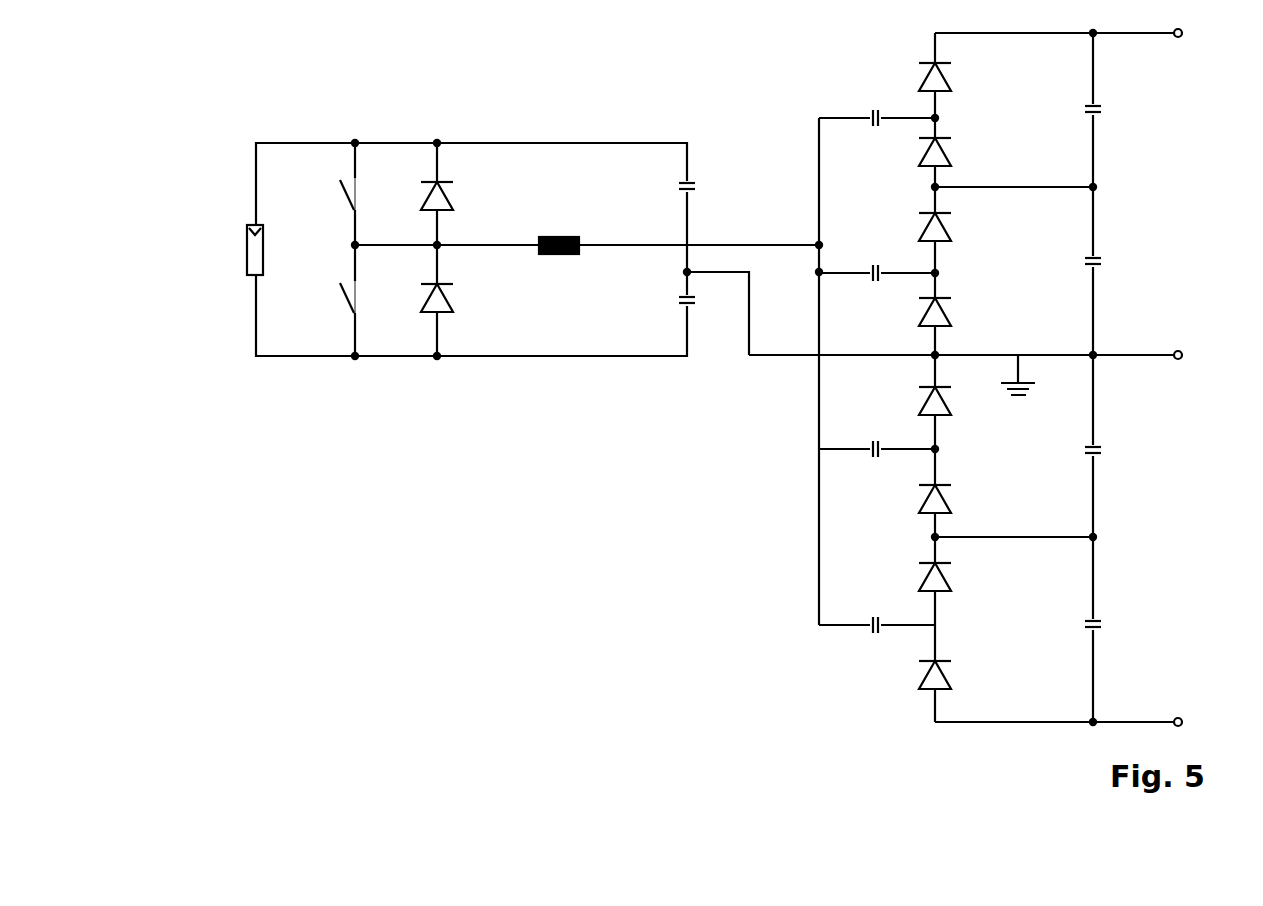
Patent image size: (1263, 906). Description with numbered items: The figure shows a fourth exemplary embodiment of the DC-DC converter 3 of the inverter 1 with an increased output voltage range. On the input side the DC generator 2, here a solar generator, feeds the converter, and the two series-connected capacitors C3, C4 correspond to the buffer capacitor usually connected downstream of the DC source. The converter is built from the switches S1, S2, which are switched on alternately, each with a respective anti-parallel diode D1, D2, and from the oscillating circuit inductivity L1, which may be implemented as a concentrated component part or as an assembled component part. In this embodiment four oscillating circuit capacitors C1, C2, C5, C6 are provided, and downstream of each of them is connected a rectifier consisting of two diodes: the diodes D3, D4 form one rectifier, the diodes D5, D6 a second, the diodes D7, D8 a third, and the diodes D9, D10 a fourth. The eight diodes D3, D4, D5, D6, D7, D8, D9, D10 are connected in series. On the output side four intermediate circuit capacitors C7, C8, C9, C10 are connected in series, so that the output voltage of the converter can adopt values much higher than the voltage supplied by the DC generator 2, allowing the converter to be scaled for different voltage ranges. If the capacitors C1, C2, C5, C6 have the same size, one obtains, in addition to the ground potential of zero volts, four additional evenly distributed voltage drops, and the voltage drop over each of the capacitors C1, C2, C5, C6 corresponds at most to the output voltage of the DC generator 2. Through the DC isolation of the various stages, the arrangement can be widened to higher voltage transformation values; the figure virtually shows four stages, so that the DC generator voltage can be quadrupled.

The inverter 1 is at (679, 428).
The DC generator 2 is at (251, 251).
The DC-DC converter 3 is at (792, 104).
The switch S1 is at (333, 195).
The switch S2 is at (333, 298).
The anti-parallel diode D1 is at (454, 196).
The anti-parallel diode D2 is at (454, 300).
The diode D3 is at (952, 227).
The diode D4 is at (952, 312).
The diode D5 is at (952, 401).
The diode D6 is at (952, 499).
The diode D7 is at (952, 77).
The diode D8 is at (952, 152).
The diode D9 is at (952, 577).
The diode D10 is at (959, 675).
The oscillating circuit inductivity L1 is at (559, 232).
The oscillating circuit capacitor C1 is at (878, 264).
The oscillating circuit capacitor C2 is at (878, 439).
The capacitor C3 is at (673, 187).
The capacitor C4 is at (673, 301).
The oscillating circuit capacitor C5 is at (878, 108).
The oscillating circuit capacitor C6 is at (878, 615).
The intermediate circuit capacitor C7 is at (1080, 262).
The intermediate circuit capacitor C8 is at (1080, 452).
The intermediate circuit capacitor C9 is at (1080, 111).
The intermediate circuit capacitor C10 is at (1073, 626).